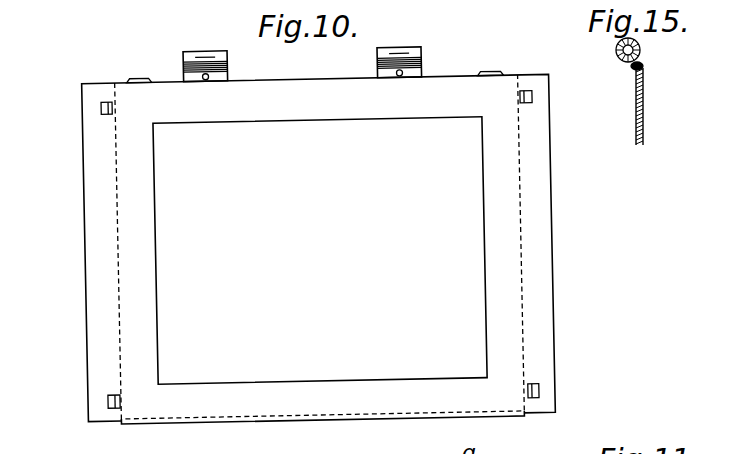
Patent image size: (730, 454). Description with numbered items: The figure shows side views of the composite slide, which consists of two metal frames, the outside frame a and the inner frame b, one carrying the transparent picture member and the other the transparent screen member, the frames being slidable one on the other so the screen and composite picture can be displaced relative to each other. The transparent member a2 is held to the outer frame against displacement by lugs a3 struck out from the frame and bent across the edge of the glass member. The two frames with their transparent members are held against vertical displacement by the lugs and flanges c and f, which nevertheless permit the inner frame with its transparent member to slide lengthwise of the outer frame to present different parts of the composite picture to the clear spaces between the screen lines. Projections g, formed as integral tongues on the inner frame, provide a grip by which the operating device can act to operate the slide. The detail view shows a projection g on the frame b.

In FIG. 10, the outside frame a is at (142, 282).
In FIG. 10, the transparent member a2 is at (118, 318).
In FIG. 10, the lugs a3 is at (110, 403).
In FIG. 10, the lugs and flanges c is at (142, 78).
In FIG. 10, the lugs and flanges f is at (248, 423).
In FIG. 10, the projections g is at (203, 54).
In FIG. 15, the projections g is at (622, 53).
In FIG. 15, the inner frame b is at (644, 122).